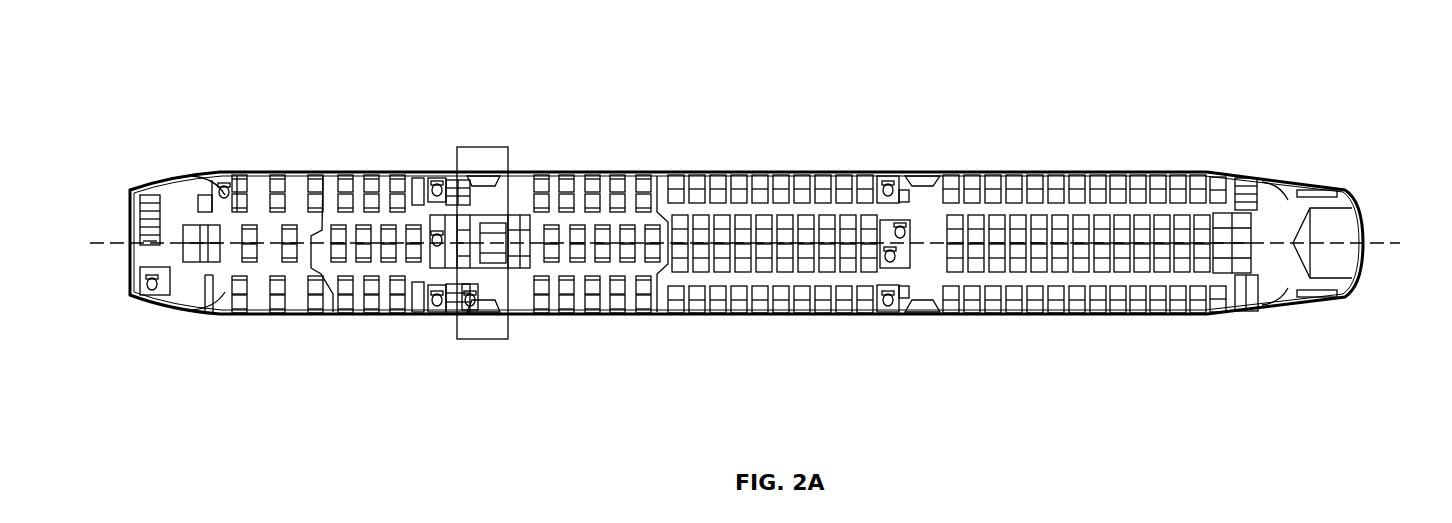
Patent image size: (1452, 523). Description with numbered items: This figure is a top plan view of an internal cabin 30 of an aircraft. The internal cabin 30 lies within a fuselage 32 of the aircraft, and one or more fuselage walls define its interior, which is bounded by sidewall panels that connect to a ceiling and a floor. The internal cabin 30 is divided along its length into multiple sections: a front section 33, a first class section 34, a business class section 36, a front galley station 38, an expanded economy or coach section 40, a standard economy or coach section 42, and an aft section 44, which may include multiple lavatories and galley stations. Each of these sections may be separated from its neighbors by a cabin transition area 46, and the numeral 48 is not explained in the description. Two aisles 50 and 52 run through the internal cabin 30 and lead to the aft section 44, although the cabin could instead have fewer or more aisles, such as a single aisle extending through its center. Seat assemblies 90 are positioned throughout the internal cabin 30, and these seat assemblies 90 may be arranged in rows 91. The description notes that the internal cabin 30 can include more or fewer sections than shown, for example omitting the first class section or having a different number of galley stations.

The internal cabin 30 is at (746, 177).
The fuselage 32 is at (605, 130).
The front section 33 is at (188, 332).
The first class section 34 is at (285, 318).
The business class section 36 is at (360, 172).
The front galley station 38 is at (483, 333).
The expanded economy or coach section 40 is at (585, 318).
The standard economy or coach section 42 is at (713, 172).
The aft section 44 is at (1285, 200).
The cabin transition area 46 is at (205, 172).
The galley 48 is at (470, 212).
The aisle 50 is at (1077, 208).
The aisle 52 is at (1095, 280).
The seat assemblies 90 is at (840, 172).
The rows 91 is at (833, 162).